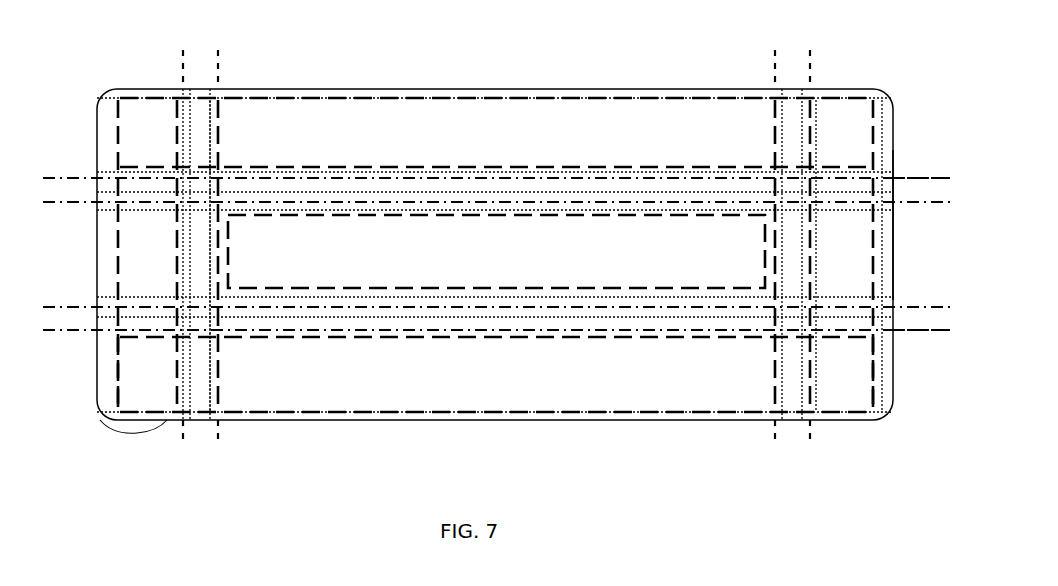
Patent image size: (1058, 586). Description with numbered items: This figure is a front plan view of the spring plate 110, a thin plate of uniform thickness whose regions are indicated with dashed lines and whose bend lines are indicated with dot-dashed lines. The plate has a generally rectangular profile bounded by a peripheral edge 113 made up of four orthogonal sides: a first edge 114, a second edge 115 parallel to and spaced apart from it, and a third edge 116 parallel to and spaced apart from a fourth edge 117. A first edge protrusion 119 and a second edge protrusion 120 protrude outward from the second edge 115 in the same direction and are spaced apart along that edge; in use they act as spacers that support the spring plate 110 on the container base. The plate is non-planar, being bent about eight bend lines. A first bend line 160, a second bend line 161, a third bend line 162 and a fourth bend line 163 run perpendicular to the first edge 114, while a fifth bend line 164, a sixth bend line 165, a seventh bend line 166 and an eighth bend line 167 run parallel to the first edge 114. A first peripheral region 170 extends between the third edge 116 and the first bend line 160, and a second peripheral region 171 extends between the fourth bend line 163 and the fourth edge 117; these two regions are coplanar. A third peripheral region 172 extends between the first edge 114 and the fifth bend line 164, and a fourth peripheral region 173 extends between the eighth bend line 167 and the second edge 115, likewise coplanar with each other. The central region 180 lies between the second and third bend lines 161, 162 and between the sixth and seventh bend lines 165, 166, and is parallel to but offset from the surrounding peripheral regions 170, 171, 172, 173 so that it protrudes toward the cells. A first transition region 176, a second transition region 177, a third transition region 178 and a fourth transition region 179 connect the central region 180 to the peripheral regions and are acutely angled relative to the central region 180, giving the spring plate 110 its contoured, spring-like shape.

The spring plate 110 is at (433, 41).
The peripheral edge 113 is at (538, 90).
The first edge 114 is at (496, 186).
The second edge 115 is at (607, 420).
The third edge 116 is at (106, 420).
The fourth edge 117 is at (895, 230).
The first edge protrusion 119 is at (136, 433).
The second edge protrusion 120 is at (820, 420).
The first bend line 160 is at (180, 68).
The second bend line 161 is at (230, 76).
The third bend line 162 is at (764, 76).
The fourth bend line 163 is at (822, 76).
The fifth bend line 164 is at (82, 170).
The sixth bend line 165 is at (80, 262).
The seventh bend line 166 is at (84, 302).
The eighth bend line 167 is at (52, 338).
The first peripheral region 170 is at (168, 422).
The second peripheral region 171 is at (845, 420).
The third peripheral region 172 is at (340, 90).
The fourth peripheral region 173 is at (400, 420).
The first transition region 176 is at (207, 77).
The second transition region 177 is at (795, 66).
The third transition region 178 is at (922, 188).
The fourth transition region 179 is at (926, 323).
The central region 180 is at (307, 290).